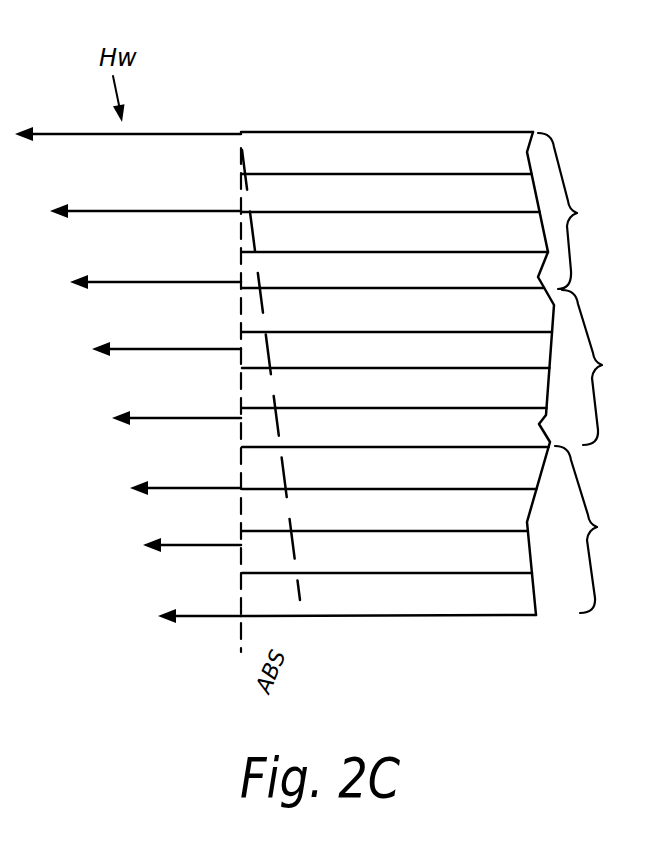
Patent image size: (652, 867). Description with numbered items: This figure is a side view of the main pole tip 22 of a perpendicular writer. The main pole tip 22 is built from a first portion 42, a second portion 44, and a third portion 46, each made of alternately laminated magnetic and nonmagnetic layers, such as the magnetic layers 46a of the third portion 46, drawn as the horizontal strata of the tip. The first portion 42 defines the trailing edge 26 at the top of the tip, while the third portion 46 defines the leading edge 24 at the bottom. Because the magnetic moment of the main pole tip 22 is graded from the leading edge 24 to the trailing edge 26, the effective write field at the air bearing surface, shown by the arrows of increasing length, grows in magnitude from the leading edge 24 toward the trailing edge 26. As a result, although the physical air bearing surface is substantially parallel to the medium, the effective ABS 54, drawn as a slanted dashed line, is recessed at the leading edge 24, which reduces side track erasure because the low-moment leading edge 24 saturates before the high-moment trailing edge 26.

The main pole tip 22 is at (491, 116).
The leading edge 24 is at (382, 615).
The trailing edge 26 is at (342, 132).
The first portion 42 is at (430, 211).
The second portion 44 is at (441, 366).
The third portion 46 is at (439, 529).
The magnetic layers 46a is at (124, 375).
The effective ABS 54 is at (300, 615).